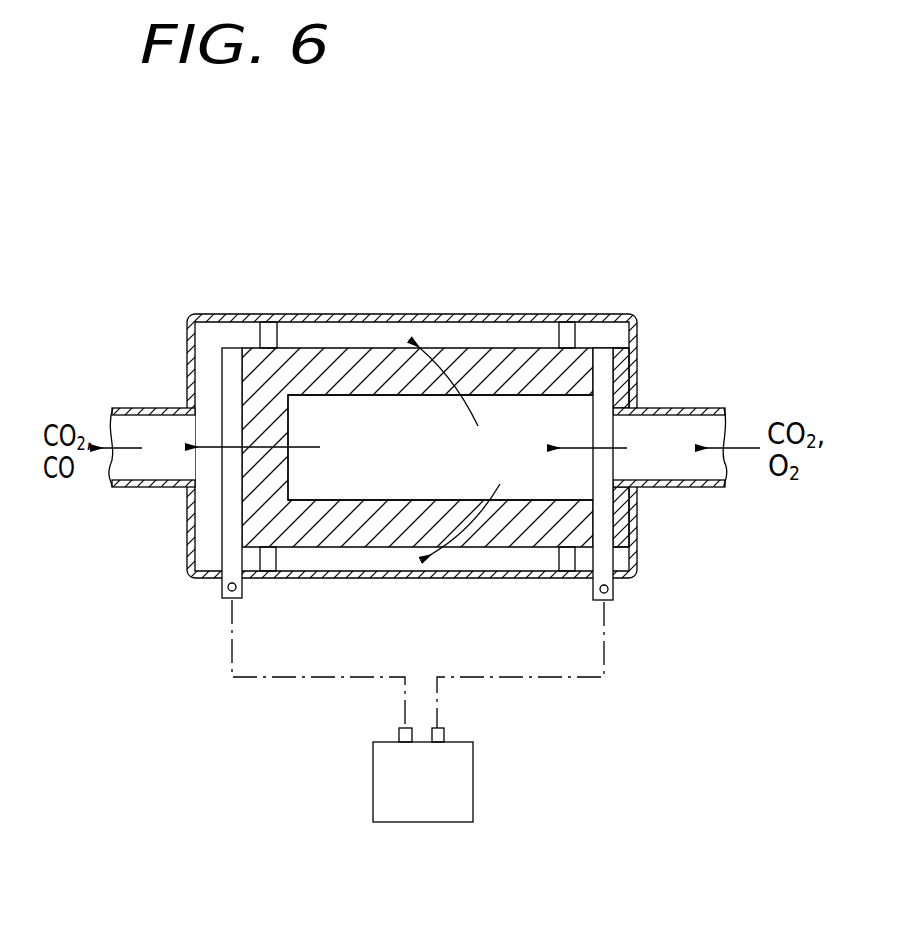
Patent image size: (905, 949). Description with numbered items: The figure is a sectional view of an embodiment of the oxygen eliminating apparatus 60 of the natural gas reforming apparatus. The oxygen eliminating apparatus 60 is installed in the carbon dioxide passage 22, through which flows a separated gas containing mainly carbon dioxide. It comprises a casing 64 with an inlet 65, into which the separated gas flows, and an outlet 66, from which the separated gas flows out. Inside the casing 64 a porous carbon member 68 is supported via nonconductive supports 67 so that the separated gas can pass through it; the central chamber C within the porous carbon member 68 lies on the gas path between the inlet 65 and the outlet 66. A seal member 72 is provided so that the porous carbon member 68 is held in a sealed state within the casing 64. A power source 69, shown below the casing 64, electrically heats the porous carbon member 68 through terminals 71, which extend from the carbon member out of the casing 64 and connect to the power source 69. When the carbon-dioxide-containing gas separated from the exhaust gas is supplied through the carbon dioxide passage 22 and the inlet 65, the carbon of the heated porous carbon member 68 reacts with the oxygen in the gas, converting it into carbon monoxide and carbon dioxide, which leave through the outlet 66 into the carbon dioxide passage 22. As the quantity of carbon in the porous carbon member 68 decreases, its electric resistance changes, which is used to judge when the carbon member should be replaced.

The oxygen eliminating apparatus 60 is at (418, 466).
The casing 64 is at (521, 318).
The inlet 65 is at (618, 436).
The outlet 66 is at (195, 432).
The nonconductive supports 67 is at (256, 333).
The porous carbon member 68 is at (354, 372).
The power source 69 is at (458, 787).
The terminals 71 is at (222, 584).
The seal member 72 is at (635, 353).
The CO2 passage 22 is at (155, 470).
The chamber C is at (360, 520).